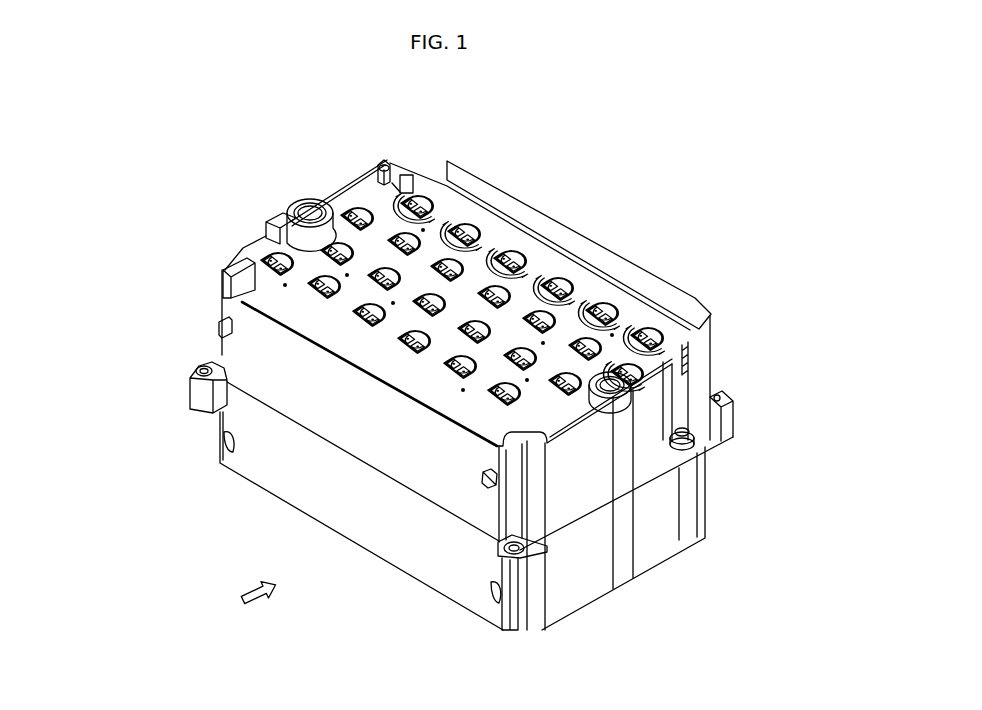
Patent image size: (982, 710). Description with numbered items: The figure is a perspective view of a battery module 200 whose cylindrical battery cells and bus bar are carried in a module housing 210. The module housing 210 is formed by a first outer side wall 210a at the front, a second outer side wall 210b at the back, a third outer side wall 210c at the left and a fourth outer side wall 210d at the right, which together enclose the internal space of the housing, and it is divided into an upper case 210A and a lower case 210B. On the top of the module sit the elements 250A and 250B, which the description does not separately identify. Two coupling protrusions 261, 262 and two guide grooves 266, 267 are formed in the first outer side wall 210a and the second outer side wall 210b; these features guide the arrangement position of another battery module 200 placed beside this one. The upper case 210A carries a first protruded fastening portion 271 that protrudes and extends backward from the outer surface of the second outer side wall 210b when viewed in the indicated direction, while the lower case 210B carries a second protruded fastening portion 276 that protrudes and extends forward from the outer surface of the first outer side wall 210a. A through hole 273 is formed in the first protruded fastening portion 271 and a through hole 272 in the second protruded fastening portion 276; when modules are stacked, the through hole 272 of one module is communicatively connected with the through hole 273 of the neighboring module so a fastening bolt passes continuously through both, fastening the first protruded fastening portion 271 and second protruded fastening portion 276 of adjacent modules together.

The battery module 200 is at (331, 97).
The module housing 210 is at (116, 372).
The upper case 210A is at (240, 377).
The lower case 210B is at (257, 467).
The first outer side wall 210a is at (357, 515).
The second outer side wall 210b is at (700, 330).
The third outer side wall 210c is at (278, 221).
The fourth outer side wall 210d is at (650, 550).
The first cover 250A is at (242, 247).
The second cover 250B is at (693, 288).
The coupling protrusion 261 is at (218, 328).
The coupling protrusion 262 is at (485, 486).
The guide groove 266 is at (223, 441).
The guide groove 267 is at (492, 598).
The first protruded fastening portion 271 is at (728, 419).
The through hole 272 is at (532, 552).
The through hole 273 is at (719, 397).
The second protruded fastening portion 276 is at (523, 577).